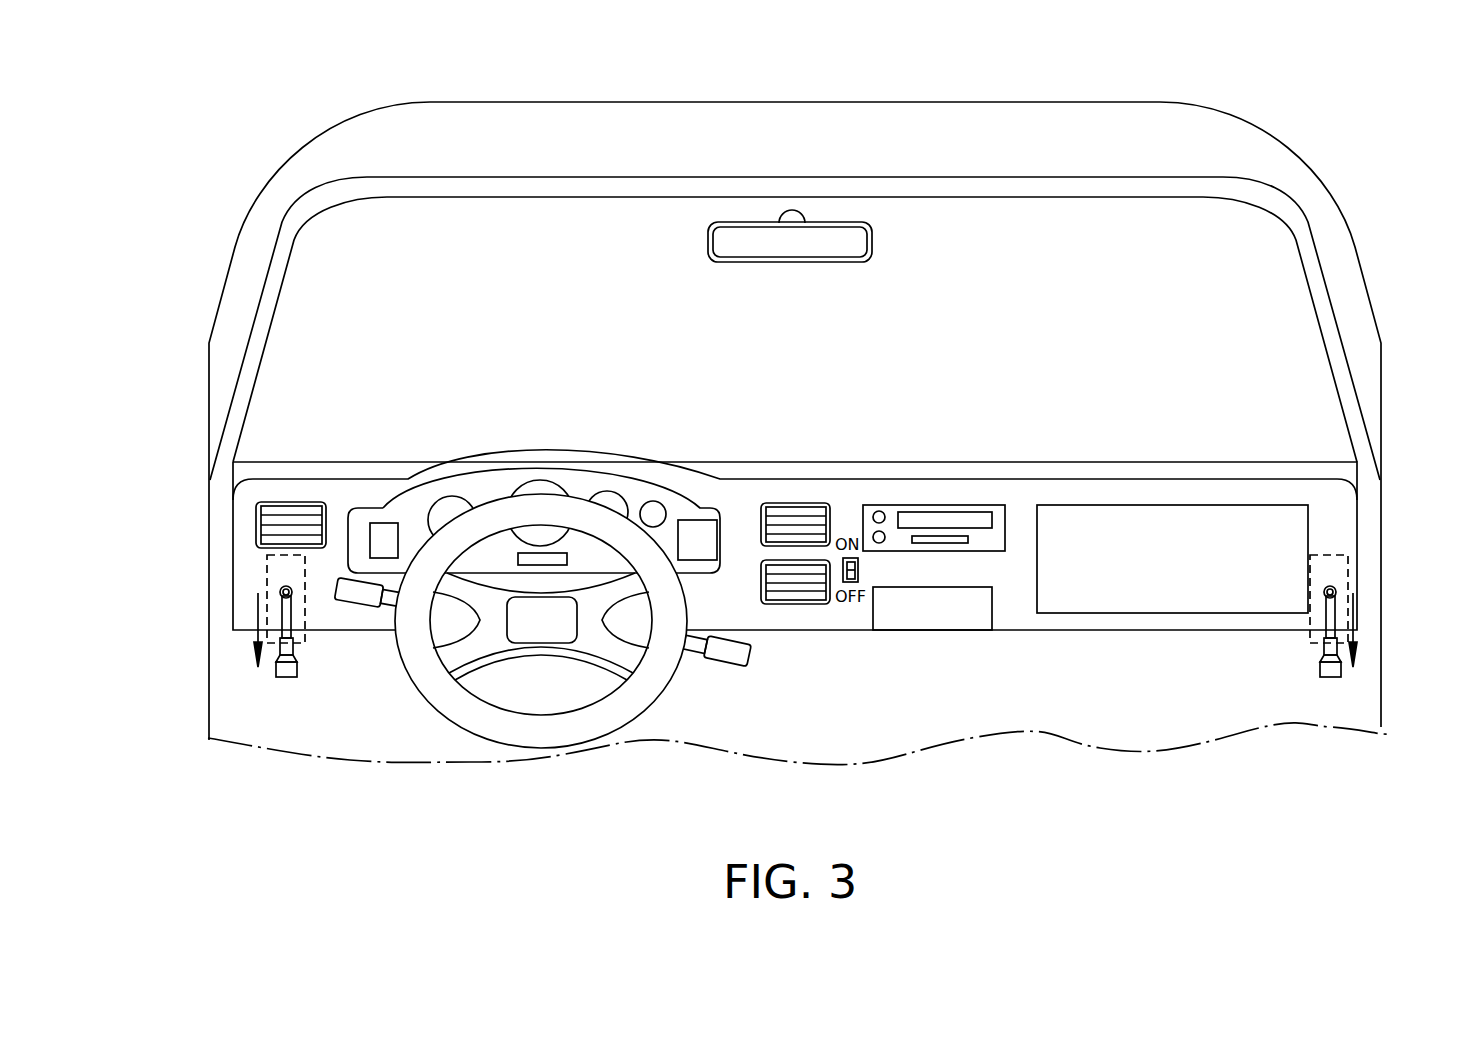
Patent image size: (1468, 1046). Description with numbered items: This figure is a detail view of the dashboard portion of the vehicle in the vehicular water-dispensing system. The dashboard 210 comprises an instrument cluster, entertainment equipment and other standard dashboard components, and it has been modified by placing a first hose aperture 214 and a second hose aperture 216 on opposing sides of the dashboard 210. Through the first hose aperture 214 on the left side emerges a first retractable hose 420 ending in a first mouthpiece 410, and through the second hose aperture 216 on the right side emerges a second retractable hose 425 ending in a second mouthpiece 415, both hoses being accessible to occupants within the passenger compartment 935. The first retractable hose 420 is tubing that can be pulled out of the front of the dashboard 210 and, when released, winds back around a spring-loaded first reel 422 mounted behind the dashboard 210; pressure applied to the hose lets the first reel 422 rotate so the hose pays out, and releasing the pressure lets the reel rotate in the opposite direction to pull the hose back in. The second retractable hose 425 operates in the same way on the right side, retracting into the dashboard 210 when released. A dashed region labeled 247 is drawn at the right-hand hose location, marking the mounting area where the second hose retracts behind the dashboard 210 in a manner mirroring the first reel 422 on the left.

The dashboard 210 is at (1047, 483).
The first hose aperture 214 is at (191, 625).
The second hose aperture 216 is at (1319, 651).
The second mounting region 247 is at (1325, 555).
The first mouthpiece 410 is at (285, 673).
The second mouthpiece 415 is at (1332, 677).
The first retractable hose 420 is at (285, 613).
The first reel 422 is at (285, 553).
The second retractable hose 425 is at (1325, 625).
The passenger compartment 935 is at (750, 710).